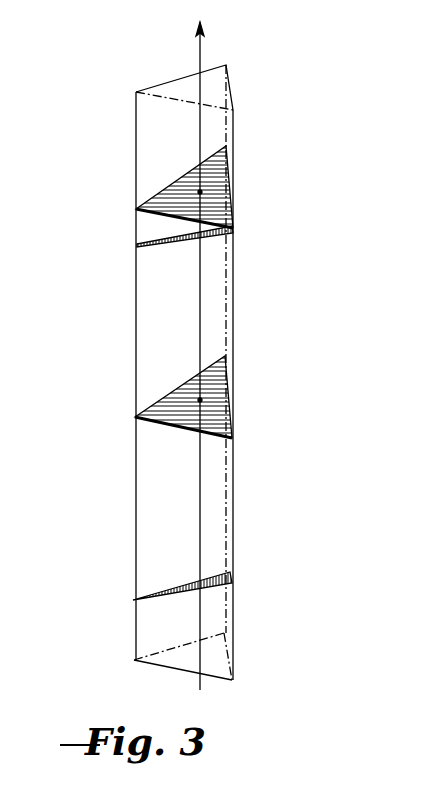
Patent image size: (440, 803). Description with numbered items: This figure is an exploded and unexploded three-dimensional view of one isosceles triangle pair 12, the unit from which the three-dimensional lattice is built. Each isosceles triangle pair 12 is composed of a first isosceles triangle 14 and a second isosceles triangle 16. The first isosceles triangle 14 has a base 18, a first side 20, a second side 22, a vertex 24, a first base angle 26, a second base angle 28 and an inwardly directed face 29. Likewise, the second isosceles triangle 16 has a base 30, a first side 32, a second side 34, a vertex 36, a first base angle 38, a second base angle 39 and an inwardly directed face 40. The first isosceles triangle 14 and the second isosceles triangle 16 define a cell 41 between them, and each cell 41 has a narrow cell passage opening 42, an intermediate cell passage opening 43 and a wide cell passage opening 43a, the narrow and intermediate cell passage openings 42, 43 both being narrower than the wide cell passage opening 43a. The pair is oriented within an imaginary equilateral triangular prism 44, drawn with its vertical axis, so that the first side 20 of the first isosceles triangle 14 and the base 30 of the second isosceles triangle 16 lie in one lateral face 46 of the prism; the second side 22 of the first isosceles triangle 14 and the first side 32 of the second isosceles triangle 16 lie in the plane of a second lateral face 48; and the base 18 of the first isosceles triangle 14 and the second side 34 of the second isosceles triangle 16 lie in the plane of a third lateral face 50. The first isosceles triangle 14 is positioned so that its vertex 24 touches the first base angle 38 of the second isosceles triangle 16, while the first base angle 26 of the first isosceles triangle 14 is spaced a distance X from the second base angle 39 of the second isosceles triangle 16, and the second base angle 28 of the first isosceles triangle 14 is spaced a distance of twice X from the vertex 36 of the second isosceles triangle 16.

The isosceles triangle pair 12 is at (240, 190).
The first isosceles triangle 14 is at (234, 233).
The second isosceles triangle 16 is at (170, 192).
The base 18 is at (158, 595).
The first side 20 is at (160, 598).
The second side 22 is at (233, 583).
The vertex 24 is at (236, 232).
The first base angle 26 is at (133, 599).
The second base angle 28 is at (232, 577).
The inwardly directed face 29 is at (163, 590).
The base 30 is at (160, 420).
The first side 32 is at (233, 397).
The second side 34 is at (188, 377).
The vertex 36 is at (226, 356).
The first base angle 38 is at (235, 228).
The second base angle 39 is at (135, 415).
The inwardly directed face 40 is at (214, 437).
The cell 41 is at (148, 214).
The narrow cell passage opening 42 is at (152, 230).
The intermediate cell passage opening 43 is at (232, 172).
The wide cell passage opening 43a is at (138, 211).
The imaginary equilateral triangular prism 44 is at (135, 316).
The lateral face 46 is at (160, 623).
The second lateral face 48 is at (228, 616).
The third lateral face 50 is at (213, 596).